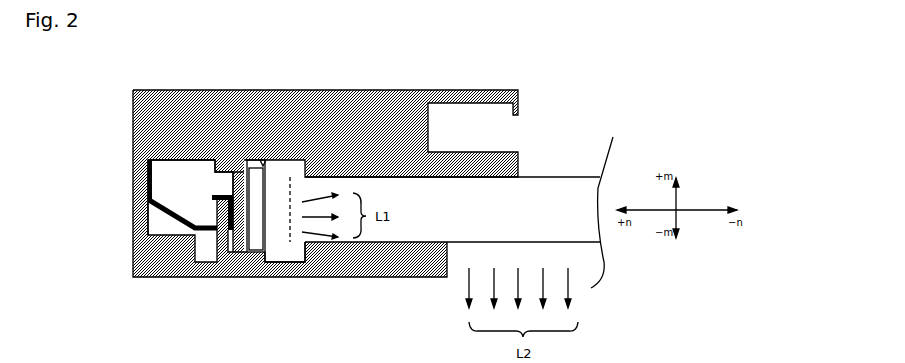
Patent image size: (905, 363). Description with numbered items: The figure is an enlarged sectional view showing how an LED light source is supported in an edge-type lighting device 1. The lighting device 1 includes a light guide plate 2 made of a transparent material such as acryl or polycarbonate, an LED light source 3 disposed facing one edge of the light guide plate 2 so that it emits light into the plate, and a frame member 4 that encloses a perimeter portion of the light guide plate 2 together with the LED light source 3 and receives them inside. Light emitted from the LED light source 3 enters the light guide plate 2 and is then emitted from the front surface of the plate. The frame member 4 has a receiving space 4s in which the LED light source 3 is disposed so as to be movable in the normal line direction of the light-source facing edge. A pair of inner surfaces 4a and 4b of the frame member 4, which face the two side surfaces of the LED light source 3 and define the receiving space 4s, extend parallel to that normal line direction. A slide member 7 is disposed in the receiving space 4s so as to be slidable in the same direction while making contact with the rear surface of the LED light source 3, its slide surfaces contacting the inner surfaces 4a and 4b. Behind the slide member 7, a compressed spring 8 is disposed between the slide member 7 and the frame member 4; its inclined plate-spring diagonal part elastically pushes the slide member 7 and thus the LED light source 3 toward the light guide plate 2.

The lighting device 1 is at (128, 290).
The light guide plate 2 is at (495, 225).
The LED light source 3 is at (267, 243).
The frame member 4 is at (500, 90).
The inner surface 4a is at (266, 256).
The inner surface 4b is at (265, 163).
The receiving space 4s is at (194, 197).
The slide member 7 is at (233, 262).
The compressed spring 8 is at (157, 206).